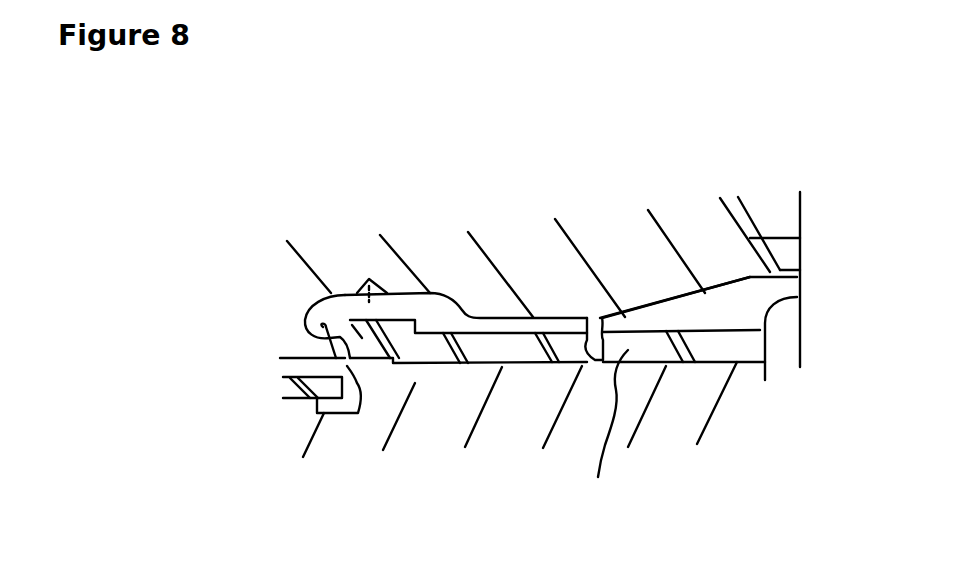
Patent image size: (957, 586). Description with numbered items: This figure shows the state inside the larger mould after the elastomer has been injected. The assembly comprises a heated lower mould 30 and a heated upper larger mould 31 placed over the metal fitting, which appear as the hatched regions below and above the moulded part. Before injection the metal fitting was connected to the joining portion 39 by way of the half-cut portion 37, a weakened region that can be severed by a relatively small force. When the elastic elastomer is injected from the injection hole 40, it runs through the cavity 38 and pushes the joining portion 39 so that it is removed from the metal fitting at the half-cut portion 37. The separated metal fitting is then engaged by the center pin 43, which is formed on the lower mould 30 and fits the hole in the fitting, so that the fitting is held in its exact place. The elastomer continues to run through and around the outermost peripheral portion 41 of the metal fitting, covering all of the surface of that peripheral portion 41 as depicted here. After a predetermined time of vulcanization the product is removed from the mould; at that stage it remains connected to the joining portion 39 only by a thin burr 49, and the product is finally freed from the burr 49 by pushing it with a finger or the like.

The lower mould 30 is at (513, 430).
The upper larger mould 31 is at (530, 260).
The half-cut portion 37 is at (343, 297).
The cavity 38 is at (432, 307).
The joining portion 39 is at (322, 385).
The injection hole 40 is at (793, 258).
The outermost peripheral portion 41 is at (350, 353).
The center pin 43 is at (783, 333).
The thin burr 49 is at (347, 417).